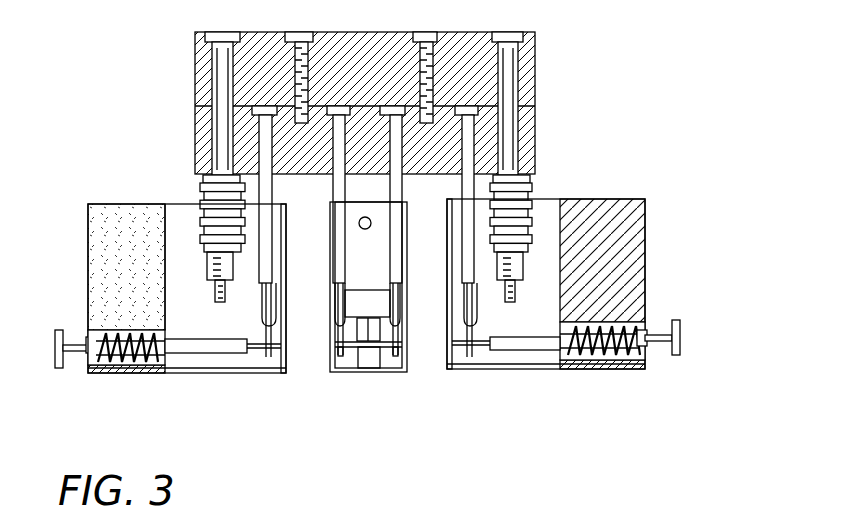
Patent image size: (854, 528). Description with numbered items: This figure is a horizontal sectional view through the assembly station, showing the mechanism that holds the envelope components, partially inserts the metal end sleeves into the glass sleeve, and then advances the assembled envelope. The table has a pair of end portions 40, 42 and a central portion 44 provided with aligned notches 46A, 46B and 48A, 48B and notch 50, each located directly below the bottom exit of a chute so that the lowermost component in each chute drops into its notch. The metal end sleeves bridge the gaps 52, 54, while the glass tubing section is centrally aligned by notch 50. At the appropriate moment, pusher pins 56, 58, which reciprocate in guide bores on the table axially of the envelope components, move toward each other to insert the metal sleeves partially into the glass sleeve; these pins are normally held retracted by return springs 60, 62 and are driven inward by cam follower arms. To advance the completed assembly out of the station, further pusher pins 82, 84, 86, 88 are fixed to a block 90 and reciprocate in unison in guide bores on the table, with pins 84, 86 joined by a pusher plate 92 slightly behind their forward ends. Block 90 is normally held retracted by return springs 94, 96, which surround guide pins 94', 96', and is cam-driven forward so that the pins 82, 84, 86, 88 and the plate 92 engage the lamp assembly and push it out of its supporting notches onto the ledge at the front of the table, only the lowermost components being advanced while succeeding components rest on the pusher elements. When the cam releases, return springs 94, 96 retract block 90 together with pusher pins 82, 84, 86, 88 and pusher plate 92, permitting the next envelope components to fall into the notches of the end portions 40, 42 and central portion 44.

The block 90 is at (533, 128).
The guide pin 94' is at (181, 107).
The guide pin 96' is at (553, 107).
The gap 52 is at (303, 213).
The gap 54 is at (428, 188).
The pusher pin 82 is at (266, 270).
The pusher pin 84 is at (340, 241).
The pusher pin 86 is at (393, 237).
The pusher pin 88 is at (466, 270).
The return spring 94 is at (188, 232).
The return spring 96 is at (546, 231).
The end portion 40 is at (188, 370).
The end portion 42 is at (517, 370).
The central portion 44 is at (402, 362).
The notch 46A is at (282, 374).
The notch 46B is at (350, 372).
The notch 48A is at (402, 346).
The notch 48B is at (462, 372).
The notch 50 is at (380, 372).
The pusher pin 56 is at (224, 354).
The pusher pin 58 is at (555, 372).
The return spring 60 is at (110, 374).
The return spring 62 is at (640, 372).
The pusher plate 92 is at (345, 300).